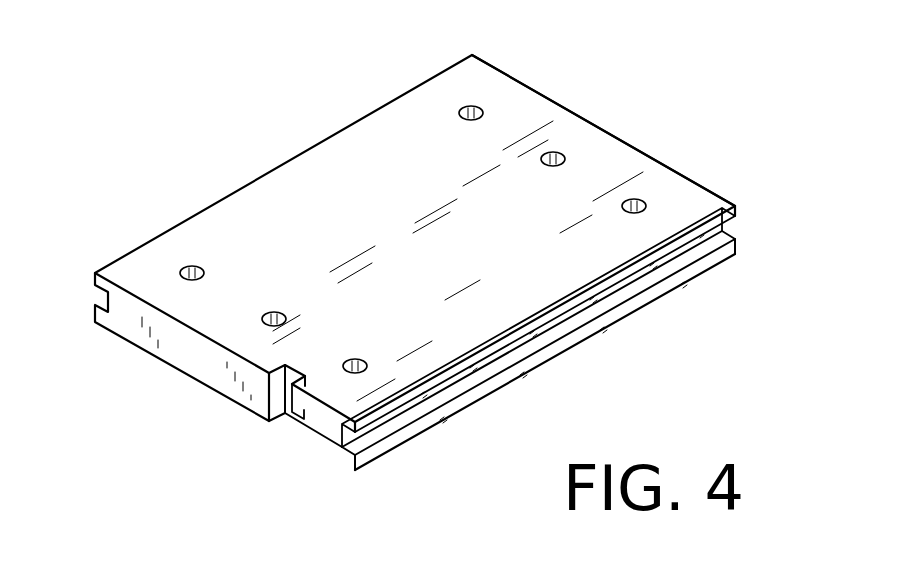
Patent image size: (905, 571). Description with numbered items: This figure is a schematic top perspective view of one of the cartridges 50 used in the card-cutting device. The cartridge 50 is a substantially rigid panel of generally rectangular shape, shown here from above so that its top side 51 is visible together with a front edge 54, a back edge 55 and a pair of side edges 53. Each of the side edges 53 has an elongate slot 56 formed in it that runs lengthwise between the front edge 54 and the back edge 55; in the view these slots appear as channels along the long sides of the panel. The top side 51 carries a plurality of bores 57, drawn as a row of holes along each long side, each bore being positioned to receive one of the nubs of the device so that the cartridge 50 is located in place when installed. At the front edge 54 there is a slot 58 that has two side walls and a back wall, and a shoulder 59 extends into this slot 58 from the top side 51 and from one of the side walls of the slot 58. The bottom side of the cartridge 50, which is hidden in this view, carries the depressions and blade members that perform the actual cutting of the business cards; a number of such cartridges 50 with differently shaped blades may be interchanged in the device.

The cartridge 50 is at (738, 183).
The top side 51 is at (508, 107).
The side edges 53 is at (379, 455).
The front edge 54 is at (173, 348).
The back edge 55 is at (598, 125).
The elongate slot 56 is at (332, 447).
The bores 57 is at (188, 265).
The slot 58 is at (267, 413).
The shoulder 59 is at (302, 420).